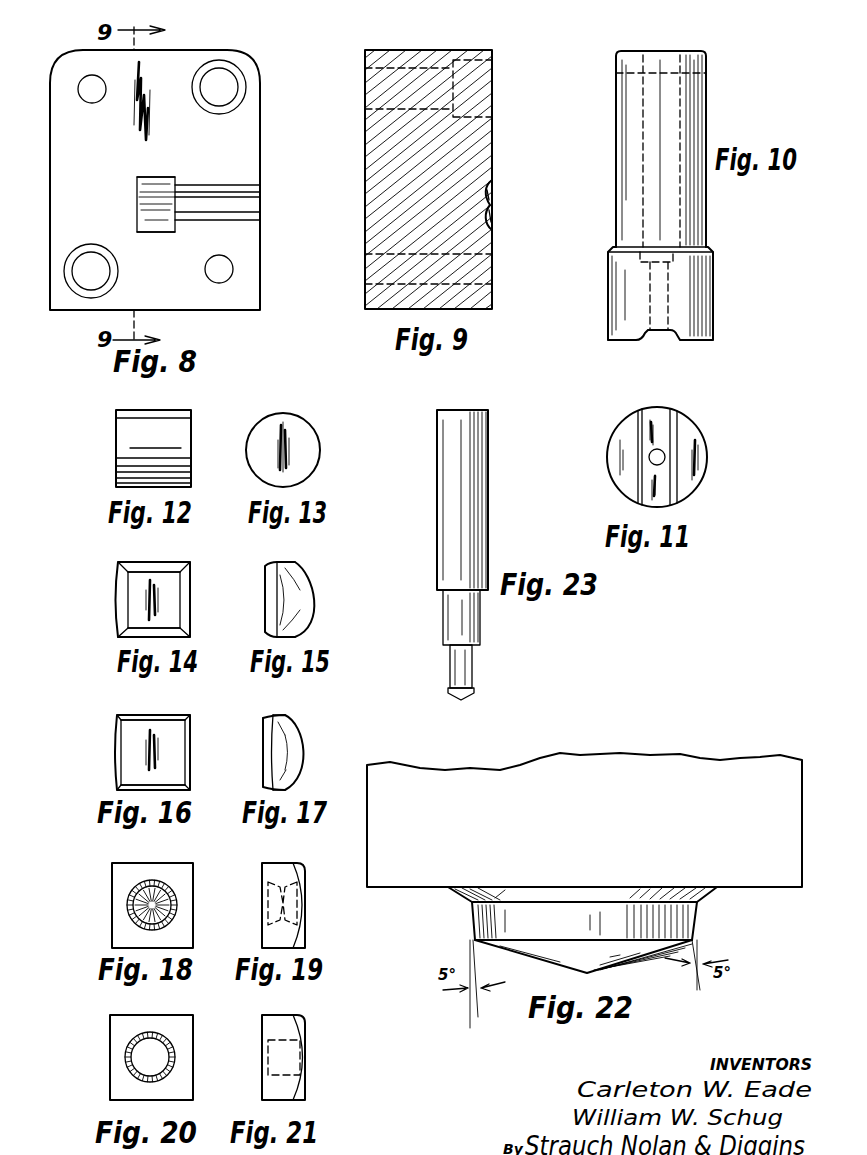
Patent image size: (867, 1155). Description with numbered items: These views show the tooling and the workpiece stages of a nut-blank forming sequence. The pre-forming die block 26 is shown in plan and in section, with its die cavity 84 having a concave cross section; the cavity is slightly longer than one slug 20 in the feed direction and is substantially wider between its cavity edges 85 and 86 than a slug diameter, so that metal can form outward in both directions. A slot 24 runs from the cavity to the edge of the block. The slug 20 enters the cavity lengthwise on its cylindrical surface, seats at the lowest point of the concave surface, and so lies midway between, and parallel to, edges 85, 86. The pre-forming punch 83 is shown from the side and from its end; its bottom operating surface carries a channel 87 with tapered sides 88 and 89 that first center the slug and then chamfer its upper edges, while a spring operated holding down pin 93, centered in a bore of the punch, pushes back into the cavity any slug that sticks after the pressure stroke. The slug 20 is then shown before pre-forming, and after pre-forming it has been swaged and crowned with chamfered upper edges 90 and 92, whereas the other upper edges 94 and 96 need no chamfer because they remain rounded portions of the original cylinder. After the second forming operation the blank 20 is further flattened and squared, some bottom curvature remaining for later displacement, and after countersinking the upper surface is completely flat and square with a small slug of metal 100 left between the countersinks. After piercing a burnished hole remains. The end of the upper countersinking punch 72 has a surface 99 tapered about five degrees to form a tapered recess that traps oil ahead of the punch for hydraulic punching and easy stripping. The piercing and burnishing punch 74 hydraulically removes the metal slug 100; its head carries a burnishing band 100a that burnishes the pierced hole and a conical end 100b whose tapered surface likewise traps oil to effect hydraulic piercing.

In FIG. 8, the pre-forming die block 26 is at (247, 127).
In FIG. 9, the pre-forming die block 26 is at (493, 160).
In FIG. 8, the slot 24 is at (232, 185).
In FIG. 9, the slot 24 is at (493, 206).
In FIG. 8, the die cavity 84 is at (137, 202).
In FIG. 9, the die cavity 84 is at (489, 195).
In FIG. 8, the cavity edge 85 is at (155, 177).
In FIG. 8, the cavity edge 86 is at (157, 232).
In FIG. 9, the cavity edge 86 is at (493, 228).
In FIG. 10, the pre-forming punch 83 is at (696, 140).
In FIG. 11, the pre-forming punch 83 is at (700, 460).
In FIG. 10, the holding down pin 93 is at (672, 296).
In FIG. 11, the holding down pin 93 is at (649, 458).
In FIG. 10, the tapered side 88 is at (637, 342).
In FIG. 11, the tapered side 88 is at (640, 507).
In FIG. 10, the channel 87 is at (657, 408).
In FIG. 10, the tapered side 89 is at (676, 342).
In FIG. 11, the tapered side 89 is at (672, 415).
In FIG. 12, the slug 20 is at (116, 437).
In FIG. 13, the slug 20 is at (308, 455).
In FIG. 14, the slug 20 is at (118, 582).
In FIG. 15, the slug 20 is at (312, 586).
In FIG. 16, the slug 20 is at (117, 746).
In FIG. 17, the slug 20 is at (300, 752).
In FIG. 18, the slug 20 is at (112, 872).
In FIG. 19, the slug 20 is at (286, 925).
In FIG. 20, the slug 20 is at (110, 1035).
In FIG. 21, the slug 20 is at (300, 1068).
In FIG. 14, the upper edge 94 is at (161, 567).
In FIG. 15, the upper edge 94 is at (279, 565).
In FIG. 16, the upper edge 94 is at (137, 718).
In FIG. 17, the upper edge 94 is at (272, 716).
In FIG. 14, the upper edge 90 is at (116, 606).
In FIG. 16, the upper edge 90 is at (116, 775).
In FIG. 14, the upper edge 96 is at (128, 634).
In FIG. 15, the upper edge 96 is at (268, 636).
In FIG. 16, the upper edge 96 is at (121, 789).
In FIG. 17, the upper edge 96 is at (266, 787).
In FIG. 14, the upper edge 92 is at (182, 590).
In FIG. 16, the upper edge 92 is at (190, 740).
In FIG. 17, the upper edge 92 is at (268, 750).
In FIG. 19, the slug of metal 100 is at (304, 894).
In FIG. 23, the piercing and burnishing punch 74 is at (441, 512).
In FIG. 23, the burnishing band 100a is at (450, 690).
In FIG. 23, the conical end 100b is at (463, 698).
In FIG. 22, the upper countersinking punch 72 is at (665, 765).
In FIG. 22, the tapered surface 99 is at (471, 930).